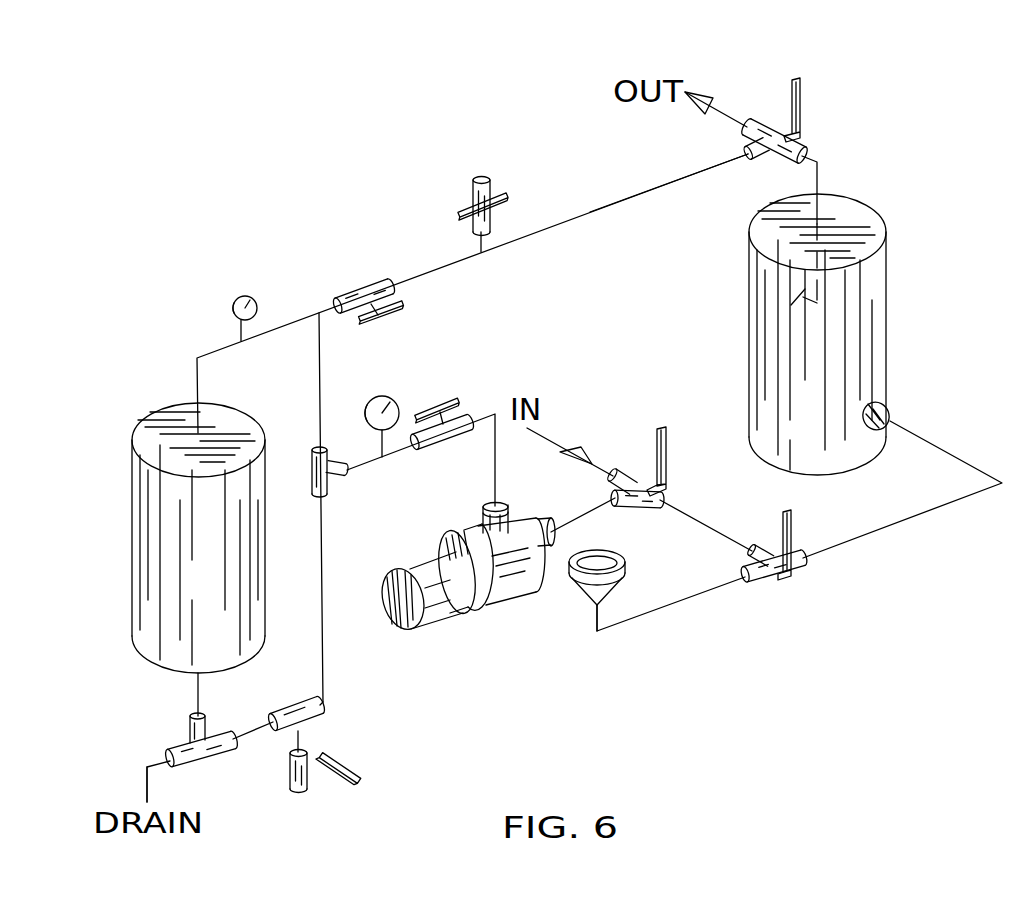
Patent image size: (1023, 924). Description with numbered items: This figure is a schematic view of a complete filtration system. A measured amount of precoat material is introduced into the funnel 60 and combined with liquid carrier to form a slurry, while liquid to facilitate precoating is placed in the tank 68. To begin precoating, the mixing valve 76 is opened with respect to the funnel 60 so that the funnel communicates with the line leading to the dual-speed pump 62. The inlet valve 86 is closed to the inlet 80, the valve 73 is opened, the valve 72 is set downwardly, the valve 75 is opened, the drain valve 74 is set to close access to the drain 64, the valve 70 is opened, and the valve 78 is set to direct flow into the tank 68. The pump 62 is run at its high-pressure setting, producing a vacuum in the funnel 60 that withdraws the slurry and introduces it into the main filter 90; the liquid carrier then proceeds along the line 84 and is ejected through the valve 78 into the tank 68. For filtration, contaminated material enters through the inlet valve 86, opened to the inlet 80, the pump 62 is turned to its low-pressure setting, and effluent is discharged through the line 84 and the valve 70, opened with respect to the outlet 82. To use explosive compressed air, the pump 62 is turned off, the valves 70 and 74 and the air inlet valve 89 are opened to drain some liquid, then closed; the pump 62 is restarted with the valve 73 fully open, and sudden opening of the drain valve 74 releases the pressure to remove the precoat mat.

The funnel 60 is at (585, 598).
The dual-speed pump 62 is at (475, 520).
The drain 64 is at (207, 825).
The tank 68 is at (882, 320).
The valve 70 is at (358, 295).
The valve 72 is at (346, 478).
The valve 73 is at (462, 420).
The drain valve 74 is at (185, 748).
The valve 75 is at (288, 772).
The mixing valve 76 is at (800, 567).
The valve 78 is at (805, 142).
The inlet 80 is at (546, 422).
The outlet 82 is at (747, 124).
The line 84 is at (590, 212).
The inlet valve 86 is at (663, 500).
The air inlet valve 89 is at (483, 254).
The main filter 90 is at (257, 587).